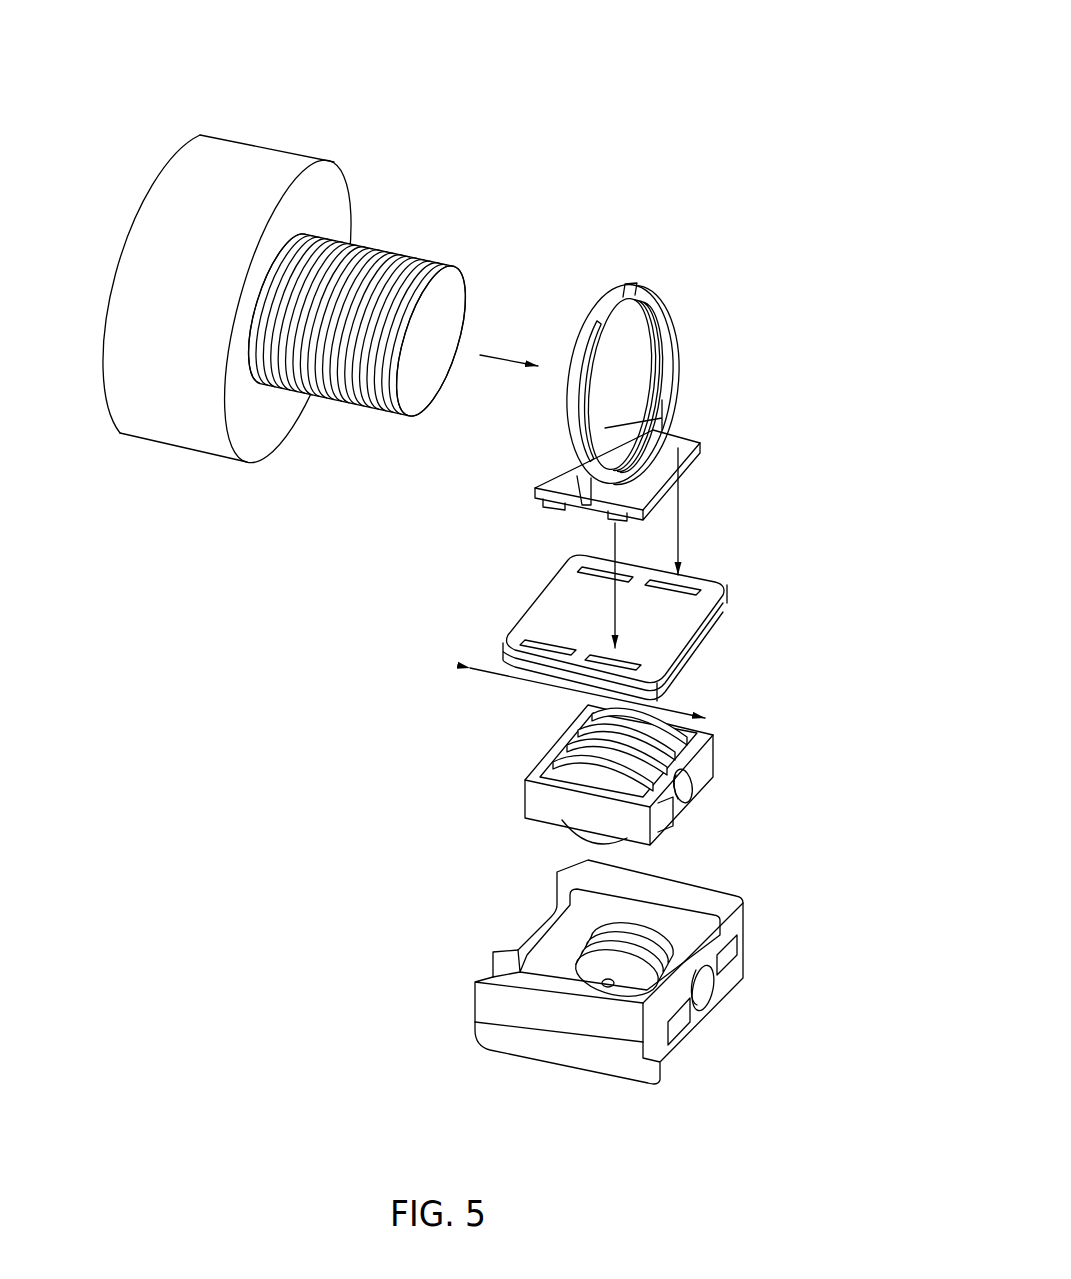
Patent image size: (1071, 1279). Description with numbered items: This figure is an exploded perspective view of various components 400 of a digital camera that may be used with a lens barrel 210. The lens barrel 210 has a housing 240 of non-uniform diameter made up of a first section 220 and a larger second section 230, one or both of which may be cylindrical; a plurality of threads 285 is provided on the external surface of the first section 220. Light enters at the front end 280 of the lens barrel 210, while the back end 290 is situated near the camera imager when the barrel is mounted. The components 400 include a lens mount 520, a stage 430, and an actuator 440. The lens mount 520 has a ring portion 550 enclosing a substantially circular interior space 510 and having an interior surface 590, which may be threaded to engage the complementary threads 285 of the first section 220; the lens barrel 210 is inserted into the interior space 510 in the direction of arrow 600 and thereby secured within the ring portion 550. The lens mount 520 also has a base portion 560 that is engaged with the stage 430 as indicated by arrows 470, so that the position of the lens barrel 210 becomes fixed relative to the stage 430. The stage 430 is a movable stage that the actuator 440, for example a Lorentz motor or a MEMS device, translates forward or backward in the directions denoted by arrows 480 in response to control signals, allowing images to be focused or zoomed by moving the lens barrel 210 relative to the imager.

The lens barrel 210 is at (160, 128).
The first section 220 is at (387, 254).
The second section 230 is at (205, 138).
The housing 240 is at (543, 110).
The front end 280 is at (436, 421).
The threads 285 is at (331, 383).
The back end 290 is at (96, 431).
The components 400 is at (853, 379).
The stage 430 is at (538, 604).
The actuator 440 is at (460, 703).
The arrows 470 is at (612, 538).
The arrows 480 is at (677, 704).
The interior space 510 is at (630, 348).
The lens mount 520 is at (622, 265).
The ring portion 550 is at (567, 408).
The base portion 560 is at (701, 444).
The interior surface 590 is at (667, 358).
The arrow 600 is at (503, 352).